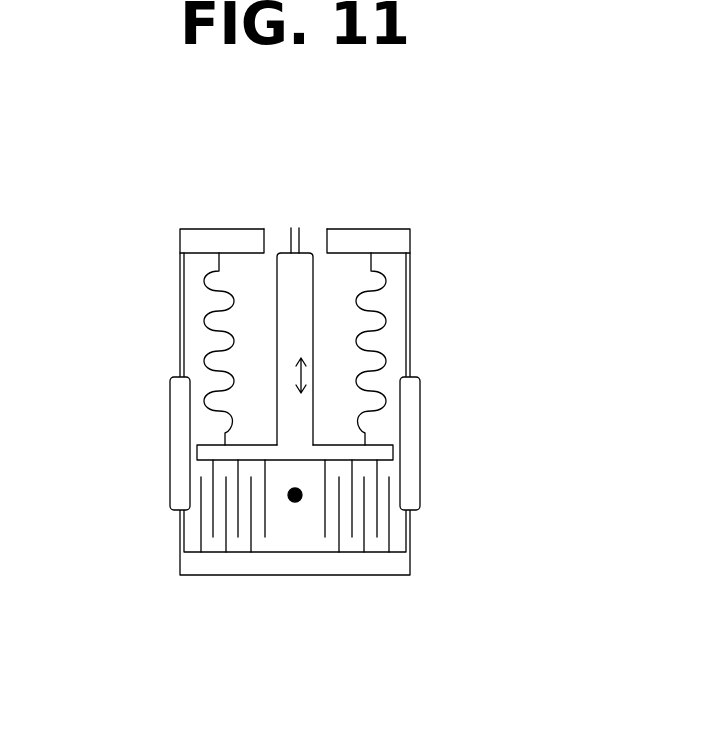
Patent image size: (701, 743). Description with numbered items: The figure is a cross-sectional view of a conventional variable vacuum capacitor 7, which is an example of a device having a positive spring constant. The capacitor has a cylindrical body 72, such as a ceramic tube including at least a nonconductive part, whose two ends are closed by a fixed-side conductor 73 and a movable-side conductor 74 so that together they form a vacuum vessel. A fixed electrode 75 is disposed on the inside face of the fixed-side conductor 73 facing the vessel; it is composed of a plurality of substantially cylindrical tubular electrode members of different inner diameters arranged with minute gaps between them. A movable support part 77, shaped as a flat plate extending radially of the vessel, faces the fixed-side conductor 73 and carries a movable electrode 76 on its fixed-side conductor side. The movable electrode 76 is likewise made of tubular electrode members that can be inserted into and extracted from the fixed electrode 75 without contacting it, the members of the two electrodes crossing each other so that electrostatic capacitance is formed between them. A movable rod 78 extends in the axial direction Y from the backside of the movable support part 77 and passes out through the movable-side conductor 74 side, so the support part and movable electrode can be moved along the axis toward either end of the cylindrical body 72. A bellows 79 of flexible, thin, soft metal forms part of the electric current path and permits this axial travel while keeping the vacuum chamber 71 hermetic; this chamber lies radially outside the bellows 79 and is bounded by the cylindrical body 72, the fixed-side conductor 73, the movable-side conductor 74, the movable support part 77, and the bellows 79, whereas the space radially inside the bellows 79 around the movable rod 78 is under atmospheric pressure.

The variable vacuum capacitor 7 is at (72, 157).
The vacuum chamber 71 is at (292, 500).
The cylindrical body 72 is at (420, 402).
The fixed-side conductor 73 is at (387, 575).
The movable-side conductor 74 is at (352, 229).
The fixed electrode 75 is at (200, 520).
The movable electrode 76 is at (213, 497).
The movable support part 77 is at (392, 455).
The movable rod 78 is at (277, 310).
The bellows 79 is at (385, 318).